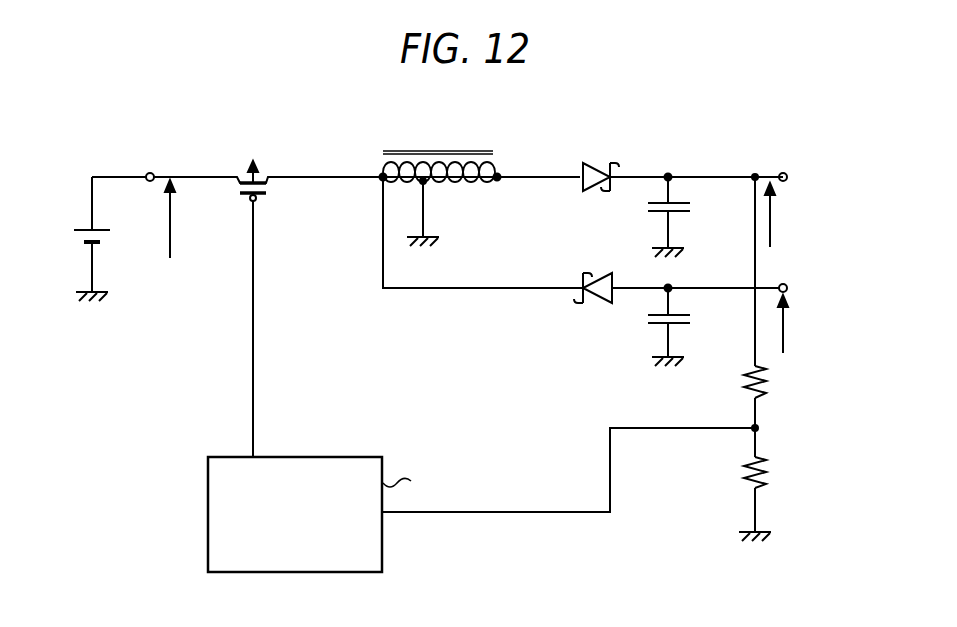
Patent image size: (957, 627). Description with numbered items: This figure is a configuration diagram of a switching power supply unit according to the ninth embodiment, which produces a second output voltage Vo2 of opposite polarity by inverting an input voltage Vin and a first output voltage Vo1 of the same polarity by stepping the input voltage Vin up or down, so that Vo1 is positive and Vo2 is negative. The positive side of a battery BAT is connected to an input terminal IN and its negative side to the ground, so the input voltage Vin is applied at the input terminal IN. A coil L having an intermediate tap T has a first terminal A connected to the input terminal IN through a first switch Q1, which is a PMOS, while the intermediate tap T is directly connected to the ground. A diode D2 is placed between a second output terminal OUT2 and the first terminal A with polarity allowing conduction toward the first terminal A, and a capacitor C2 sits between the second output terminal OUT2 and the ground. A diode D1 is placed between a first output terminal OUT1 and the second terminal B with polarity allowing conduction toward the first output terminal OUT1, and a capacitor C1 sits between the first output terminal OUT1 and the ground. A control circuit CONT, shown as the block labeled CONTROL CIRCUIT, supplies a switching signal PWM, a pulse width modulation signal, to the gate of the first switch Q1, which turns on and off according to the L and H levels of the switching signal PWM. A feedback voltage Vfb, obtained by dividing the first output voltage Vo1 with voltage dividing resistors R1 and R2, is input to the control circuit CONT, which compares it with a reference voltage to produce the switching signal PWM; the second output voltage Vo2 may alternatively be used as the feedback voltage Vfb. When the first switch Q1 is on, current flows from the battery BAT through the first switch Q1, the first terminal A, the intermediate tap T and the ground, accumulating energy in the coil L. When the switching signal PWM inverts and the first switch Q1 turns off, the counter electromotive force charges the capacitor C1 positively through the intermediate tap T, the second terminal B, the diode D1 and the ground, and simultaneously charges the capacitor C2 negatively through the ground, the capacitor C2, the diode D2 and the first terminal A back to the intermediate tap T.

The input terminal IN is at (148, 166).
The battery BAT is at (105, 239).
The input voltage Vin is at (185, 219).
The first switch Q1 is at (253, 296).
The coil L is at (439, 154).
The first terminal A is at (375, 167).
The second terminal B is at (504, 167).
The intermediate tap T is at (421, 212).
The diode D1 is at (601, 160).
The diode D2 is at (593, 271).
The capacitor C1 is at (684, 216).
The capacitor C2 is at (684, 326).
The first output terminal OUT1 is at (812, 177).
The second output terminal OUT2 is at (812, 287).
The first output voltage Vo1 is at (787, 215).
The second output voltage Vo2 is at (801, 324).
The voltage dividing resistor R1 is at (738, 382).
The voltage dividing resistor R2 is at (741, 499).
The control circuit CONTROL is at (295, 514).
The switching signal PWM is at (285, 443).
The control circuit CONT is at (417, 471).
The feedback voltage Vfb is at (528, 498).